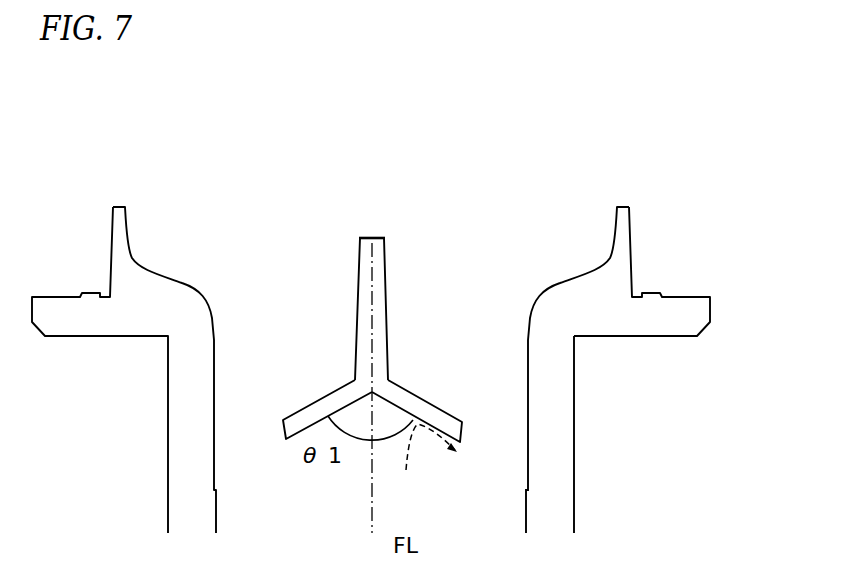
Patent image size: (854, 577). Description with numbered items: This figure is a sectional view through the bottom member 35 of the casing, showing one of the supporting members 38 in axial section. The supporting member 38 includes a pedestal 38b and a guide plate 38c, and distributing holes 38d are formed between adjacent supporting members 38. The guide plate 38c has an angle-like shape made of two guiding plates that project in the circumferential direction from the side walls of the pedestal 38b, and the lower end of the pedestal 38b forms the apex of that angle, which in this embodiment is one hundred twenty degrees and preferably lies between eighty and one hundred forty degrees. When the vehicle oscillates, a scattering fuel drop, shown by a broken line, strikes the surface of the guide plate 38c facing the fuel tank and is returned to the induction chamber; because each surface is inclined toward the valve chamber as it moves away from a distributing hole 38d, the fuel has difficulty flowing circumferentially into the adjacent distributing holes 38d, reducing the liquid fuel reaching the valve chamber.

The bottom member 35 is at (710, 320).
The supporting member 38 is at (356, 296).
The pedestal 38b is at (360, 238).
The guide plate 38c is at (325, 403).
The distributing hole 38d is at (495, 430).